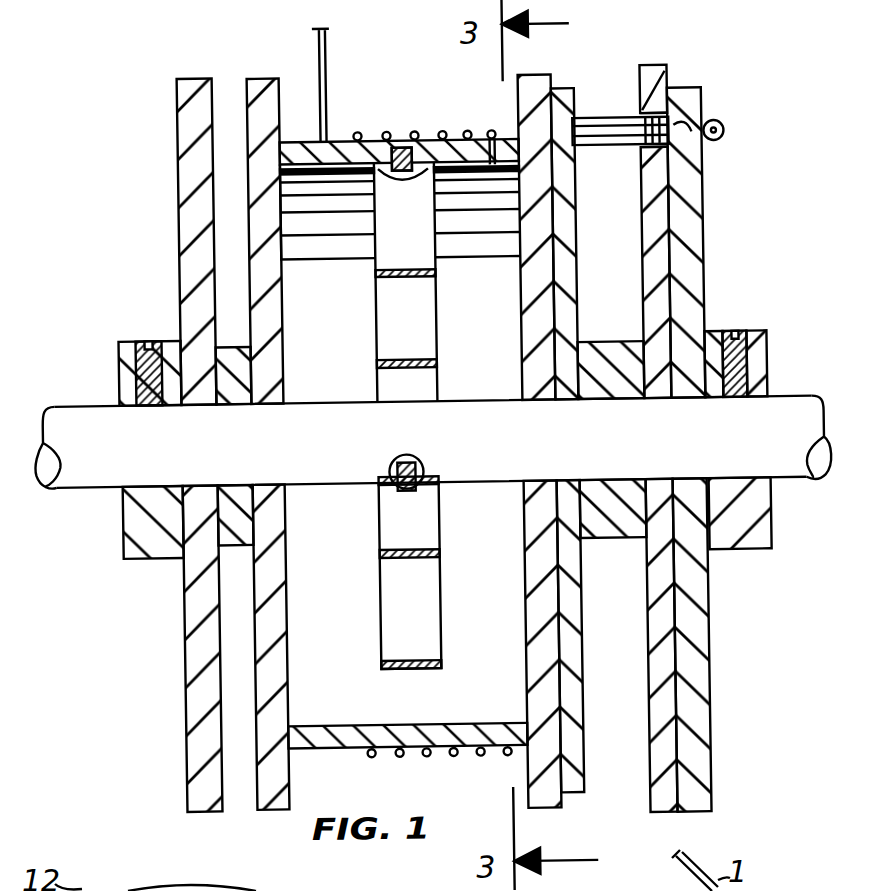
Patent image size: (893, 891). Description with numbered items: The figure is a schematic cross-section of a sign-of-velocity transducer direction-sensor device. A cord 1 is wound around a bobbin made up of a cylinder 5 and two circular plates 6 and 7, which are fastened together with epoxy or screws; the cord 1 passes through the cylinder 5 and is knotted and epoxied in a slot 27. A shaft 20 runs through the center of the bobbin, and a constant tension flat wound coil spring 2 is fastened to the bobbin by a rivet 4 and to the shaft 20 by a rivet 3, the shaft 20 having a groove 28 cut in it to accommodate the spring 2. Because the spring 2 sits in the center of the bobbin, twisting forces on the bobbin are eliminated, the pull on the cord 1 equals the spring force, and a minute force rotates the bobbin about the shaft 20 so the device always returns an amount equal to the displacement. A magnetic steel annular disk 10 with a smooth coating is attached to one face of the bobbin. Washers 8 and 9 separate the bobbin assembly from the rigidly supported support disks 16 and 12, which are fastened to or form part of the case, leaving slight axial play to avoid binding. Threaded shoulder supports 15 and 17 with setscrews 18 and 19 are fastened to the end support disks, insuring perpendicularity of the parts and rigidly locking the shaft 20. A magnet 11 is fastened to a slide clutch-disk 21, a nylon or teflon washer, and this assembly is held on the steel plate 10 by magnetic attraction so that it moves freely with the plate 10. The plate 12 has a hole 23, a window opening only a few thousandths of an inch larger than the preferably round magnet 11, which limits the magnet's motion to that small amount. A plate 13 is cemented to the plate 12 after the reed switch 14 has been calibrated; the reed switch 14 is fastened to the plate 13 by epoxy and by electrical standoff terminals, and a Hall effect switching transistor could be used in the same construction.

The cord 1 is at (331, 44).
The constant tension flat wound coil spring 2 is at (440, 358).
The rivet 3 is at (408, 495).
The rivet 4 is at (405, 180).
The cylinder 5 is at (460, 135).
The circular plate 6 is at (538, 76).
The circular plate 7 is at (270, 76).
The washer 8 is at (622, 344).
The washer 9 is at (228, 545).
The magnetic steel annular disk 10 is at (575, 90).
The magnet 11 is at (618, 135).
The support disk 12 is at (655, 68).
The plate 13 is at (692, 91).
The reed switch 14 is at (728, 132).
The threaded shoulder support 15 is at (768, 358).
The support disk 16 is at (190, 75).
The threaded shoulder support 17 is at (124, 385).
The setscrew 18 is at (740, 338).
The setscrew 19 is at (150, 340).
The shaft 20 is at (792, 482).
The slide clutch-disk 21 is at (582, 125).
The hole 23 is at (680, 148).
The slot 27 is at (503, 172).
The groove 28 is at (428, 487).